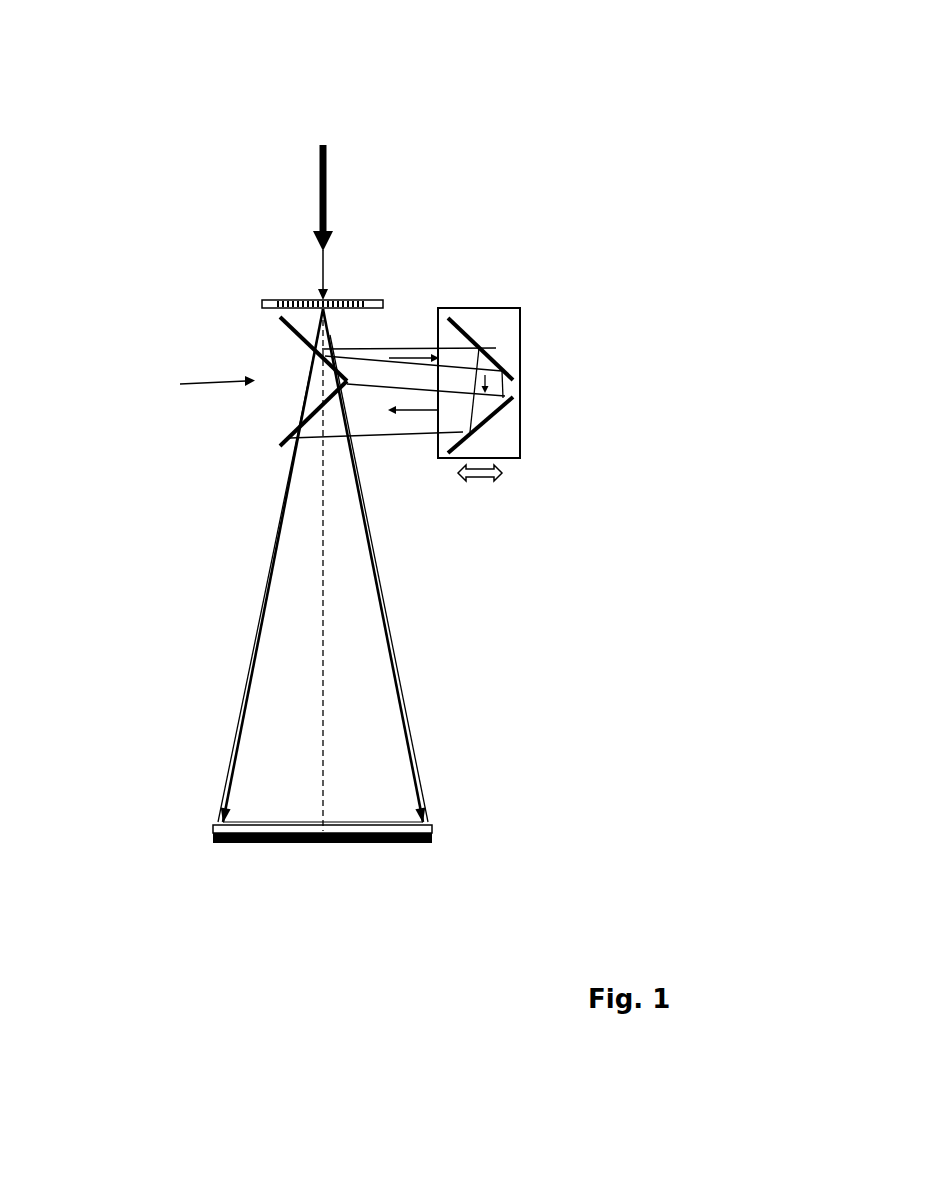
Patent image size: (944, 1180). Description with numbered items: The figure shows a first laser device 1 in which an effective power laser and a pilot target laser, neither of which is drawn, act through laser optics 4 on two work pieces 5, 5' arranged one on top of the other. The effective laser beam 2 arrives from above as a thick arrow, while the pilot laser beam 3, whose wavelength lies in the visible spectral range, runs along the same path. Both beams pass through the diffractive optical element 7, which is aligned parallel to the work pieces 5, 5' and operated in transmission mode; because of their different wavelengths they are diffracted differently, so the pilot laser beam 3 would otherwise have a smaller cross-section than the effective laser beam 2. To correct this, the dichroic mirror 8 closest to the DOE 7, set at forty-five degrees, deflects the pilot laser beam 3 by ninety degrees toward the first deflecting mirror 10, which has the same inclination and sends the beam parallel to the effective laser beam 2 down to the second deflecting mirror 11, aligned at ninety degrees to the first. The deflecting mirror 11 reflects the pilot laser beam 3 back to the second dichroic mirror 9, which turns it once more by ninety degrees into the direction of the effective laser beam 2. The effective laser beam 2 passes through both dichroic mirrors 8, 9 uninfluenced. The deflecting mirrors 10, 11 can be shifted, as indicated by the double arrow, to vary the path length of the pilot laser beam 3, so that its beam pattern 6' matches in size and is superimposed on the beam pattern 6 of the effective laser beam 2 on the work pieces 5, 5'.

The laser device 1 is at (146, 100).
The effective laser beam 2 is at (327, 182).
The pilot laser beam 3 is at (322, 263).
The laser optics 4 is at (200, 384).
The work piece 5 is at (282, 868).
The work piece 5' is at (271, 807).
The beam pattern 6 is at (361, 753).
The beam pattern 6' is at (361, 753).
The diffractive optical element 7 is at (348, 300).
The dichroic mirror 8 is at (285, 329).
The dichroic mirror 9 is at (291, 430).
The deflecting mirror 10 is at (501, 355).
The deflecting mirror 11 is at (510, 405).